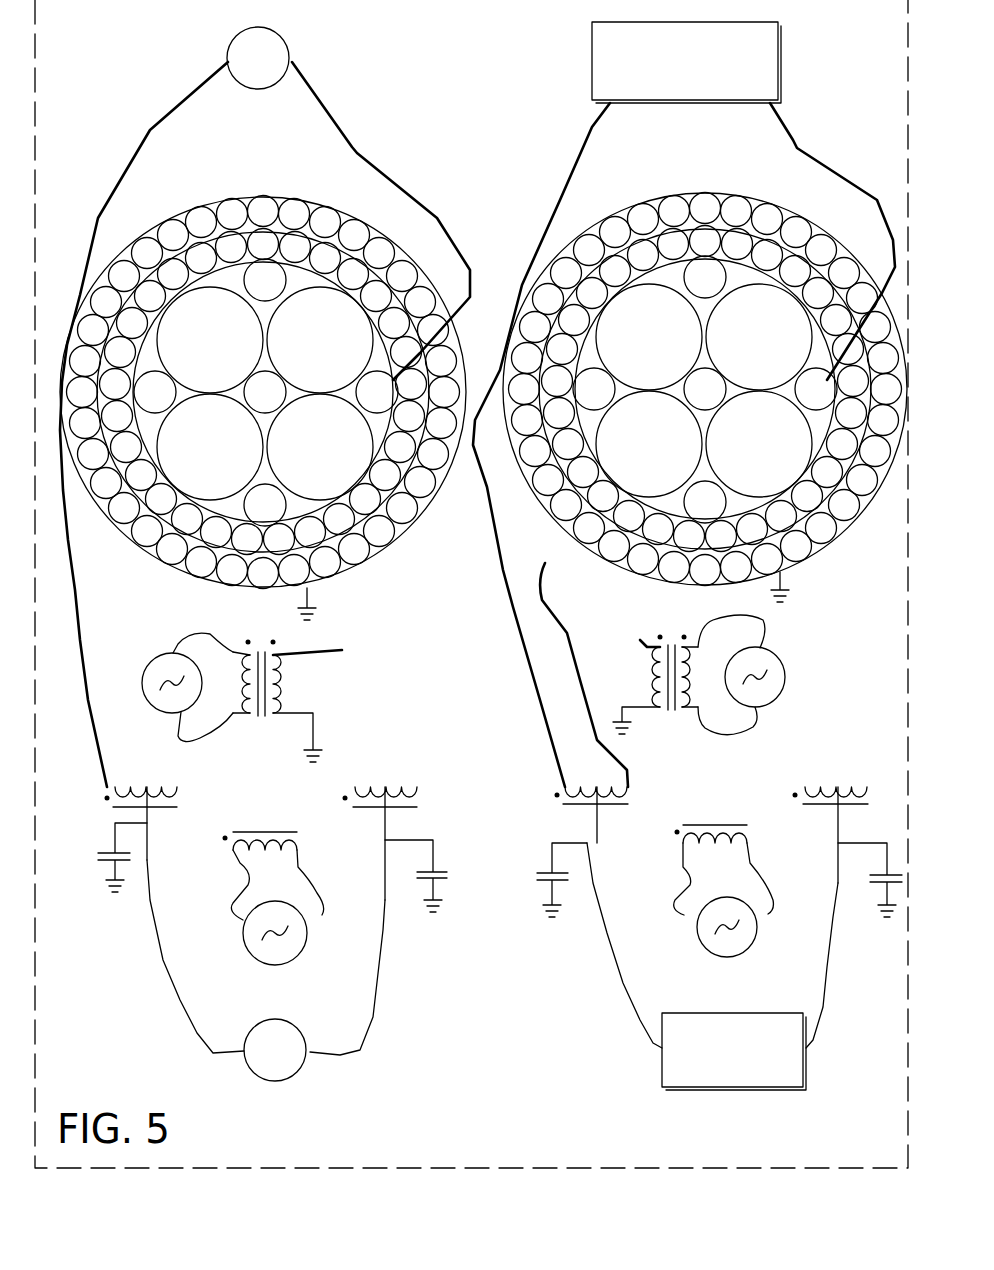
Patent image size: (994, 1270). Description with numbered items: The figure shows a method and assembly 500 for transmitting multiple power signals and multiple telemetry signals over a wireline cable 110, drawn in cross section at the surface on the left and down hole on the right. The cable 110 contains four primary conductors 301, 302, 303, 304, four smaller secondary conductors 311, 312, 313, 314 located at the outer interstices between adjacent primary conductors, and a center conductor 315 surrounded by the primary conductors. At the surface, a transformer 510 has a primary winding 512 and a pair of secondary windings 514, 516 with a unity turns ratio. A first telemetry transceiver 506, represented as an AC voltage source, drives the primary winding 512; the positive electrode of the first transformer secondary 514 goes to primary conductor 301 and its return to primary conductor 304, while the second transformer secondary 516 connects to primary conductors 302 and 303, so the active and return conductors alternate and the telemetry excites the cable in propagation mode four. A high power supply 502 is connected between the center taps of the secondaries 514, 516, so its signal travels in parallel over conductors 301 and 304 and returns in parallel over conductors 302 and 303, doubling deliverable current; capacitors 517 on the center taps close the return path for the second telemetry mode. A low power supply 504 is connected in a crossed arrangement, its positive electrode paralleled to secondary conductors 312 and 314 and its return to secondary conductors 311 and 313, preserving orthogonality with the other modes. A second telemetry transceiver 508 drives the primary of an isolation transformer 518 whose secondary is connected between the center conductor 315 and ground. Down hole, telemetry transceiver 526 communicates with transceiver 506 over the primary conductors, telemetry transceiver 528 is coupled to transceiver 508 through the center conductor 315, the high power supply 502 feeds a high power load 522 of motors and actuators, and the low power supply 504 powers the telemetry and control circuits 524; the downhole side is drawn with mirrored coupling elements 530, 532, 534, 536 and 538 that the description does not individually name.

The assembly 500 is at (448, 37).
The wireline cable 110 is at (359, 214).
The primary conductor 301 is at (103, 552).
The primary conductor 302 is at (417, 787).
The primary conductor 303 is at (355, 787).
The primary conductor 304 is at (187, 787).
The secondary conductor 311 is at (150, 130).
The secondary conductor 312 is at (364, 401).
The secondary conductor 313 is at (103, 552).
The secondary conductor 314 is at (352, 147).
The center conductor 315 is at (342, 650).
The high power supply 502 is at (262, 1068).
The low power supply 504 is at (245, 76).
The first telemetry transceiver 506 is at (305, 948).
The telemetry transceiver 508 is at (141, 668).
The transformer 510 is at (199, 816).
The primary winding 512 is at (298, 847).
The first transformer secondary 514 is at (187, 789).
The second transformer secondary 516 is at (418, 789).
The capacitors 517 is at (103, 853).
The transformer 518 is at (256, 629).
The high power load 522 is at (772, 1074).
The telemetry and control circuits 524 is at (745, 84).
The telemetry transceiver 526 is at (755, 947).
The telemetry transceiver 528 is at (774, 651).
The downhole high power coupling circuit 530 is at (651, 816).
The coupling inductor 532 is at (748, 843).
The coupling coil 534 is at (628, 785).
The coupling coil 536 is at (868, 788).
The downhole isolation transformer 538 is at (668, 630).